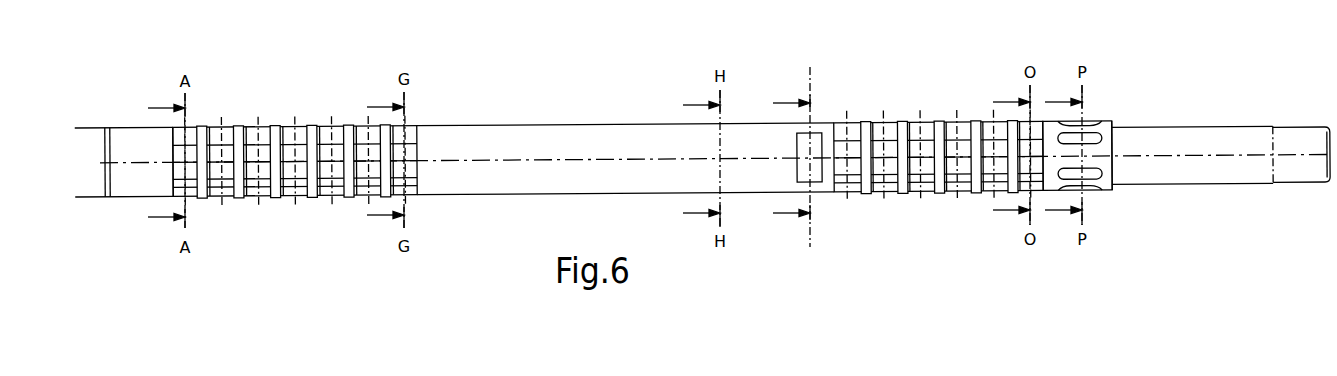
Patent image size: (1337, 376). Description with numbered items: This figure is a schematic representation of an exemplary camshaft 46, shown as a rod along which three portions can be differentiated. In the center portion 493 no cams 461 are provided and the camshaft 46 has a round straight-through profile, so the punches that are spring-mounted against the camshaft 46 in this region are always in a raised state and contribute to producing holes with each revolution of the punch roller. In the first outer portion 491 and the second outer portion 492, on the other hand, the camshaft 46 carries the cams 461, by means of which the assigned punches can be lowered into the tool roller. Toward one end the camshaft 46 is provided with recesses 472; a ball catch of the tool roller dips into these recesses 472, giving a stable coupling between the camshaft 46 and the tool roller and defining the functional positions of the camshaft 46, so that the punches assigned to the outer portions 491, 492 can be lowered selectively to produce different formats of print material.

The camshaft 46 is at (1183, 173).
The cams 461 is at (283, 221).
The recesses 472 is at (1098, 133).
The first outer portion 491 is at (279, 106).
The second outer portion 492 is at (896, 96).
The center portion 493 is at (571, 101).